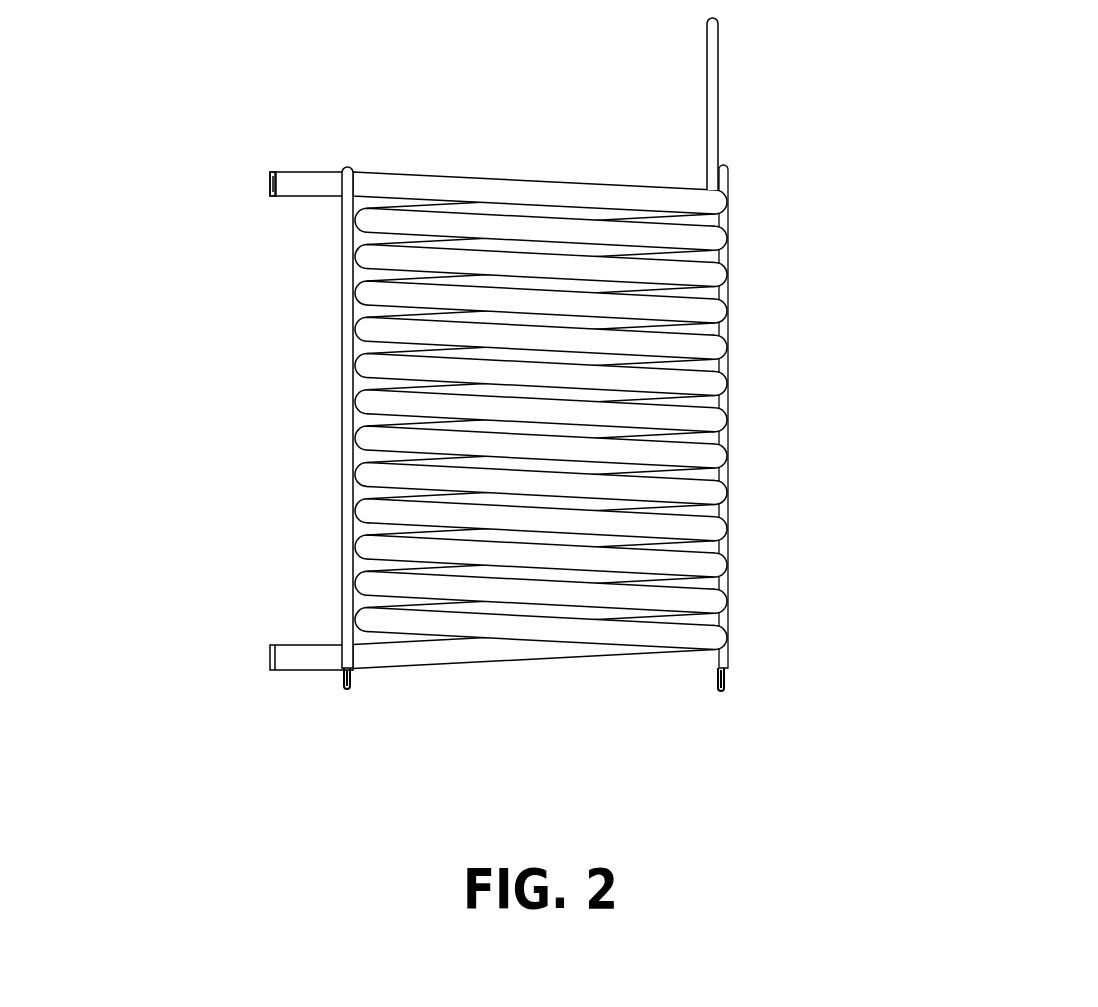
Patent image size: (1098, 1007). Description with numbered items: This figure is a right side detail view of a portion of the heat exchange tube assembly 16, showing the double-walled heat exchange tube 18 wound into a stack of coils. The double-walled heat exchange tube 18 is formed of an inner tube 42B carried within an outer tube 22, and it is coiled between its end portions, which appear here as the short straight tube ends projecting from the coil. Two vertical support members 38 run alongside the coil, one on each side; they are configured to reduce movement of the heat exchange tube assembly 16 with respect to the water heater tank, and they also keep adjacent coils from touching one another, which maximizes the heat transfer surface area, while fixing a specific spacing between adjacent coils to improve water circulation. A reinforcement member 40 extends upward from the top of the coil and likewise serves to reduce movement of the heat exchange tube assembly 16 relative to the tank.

The heat exchange tube assembly 16 is at (588, 354).
The double-walled heat exchange tube 18 is at (418, 380).
The outer tube 22 is at (309, 178).
The support members 38 is at (477, 354).
The reinforcement member 40 is at (716, 28).
The inner tube 42B is at (270, 183).